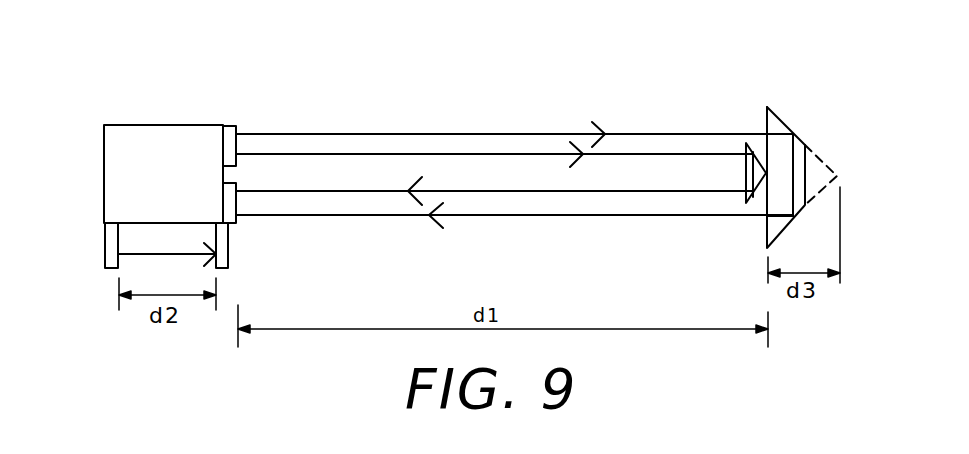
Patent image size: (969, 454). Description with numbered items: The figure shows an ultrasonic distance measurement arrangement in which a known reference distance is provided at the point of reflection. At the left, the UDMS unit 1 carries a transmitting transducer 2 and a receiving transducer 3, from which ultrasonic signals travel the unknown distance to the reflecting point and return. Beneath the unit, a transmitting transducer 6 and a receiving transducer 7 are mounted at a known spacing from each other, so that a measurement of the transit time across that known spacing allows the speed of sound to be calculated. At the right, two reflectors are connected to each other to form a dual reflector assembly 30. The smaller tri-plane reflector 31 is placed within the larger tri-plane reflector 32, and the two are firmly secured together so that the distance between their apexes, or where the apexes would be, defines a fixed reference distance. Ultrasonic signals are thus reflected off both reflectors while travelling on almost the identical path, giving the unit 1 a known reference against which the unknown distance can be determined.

The UDMS unit 1 is at (142, 133).
The transmitting transducer 2 is at (230, 133).
The receiving transducer 3 is at (232, 207).
The transmitting transducer 6 is at (112, 243).
The receiving transducer 7 is at (229, 255).
The dual reflector assembly 30 is at (758, 106).
The smaller tri-plane reflector 31 is at (750, 167).
The larger tri-plane reflector 32 is at (774, 126).